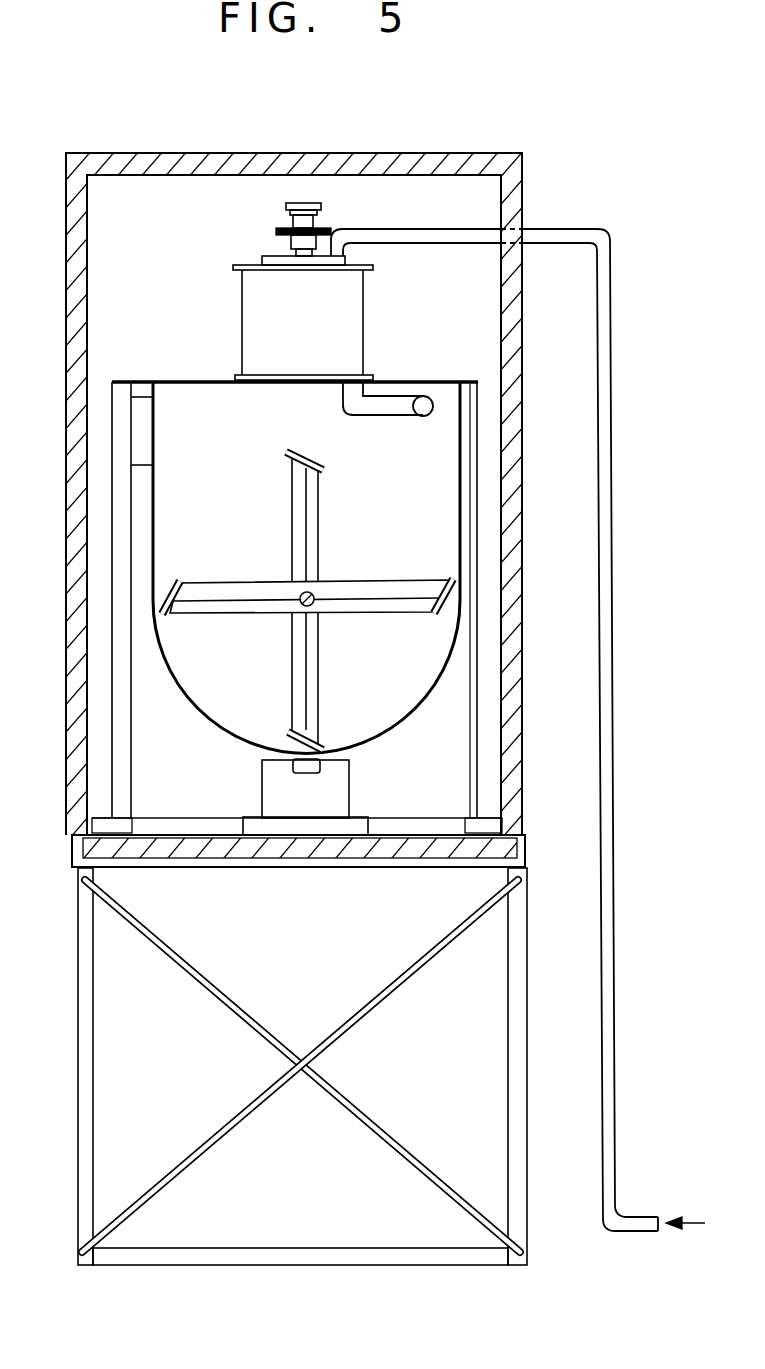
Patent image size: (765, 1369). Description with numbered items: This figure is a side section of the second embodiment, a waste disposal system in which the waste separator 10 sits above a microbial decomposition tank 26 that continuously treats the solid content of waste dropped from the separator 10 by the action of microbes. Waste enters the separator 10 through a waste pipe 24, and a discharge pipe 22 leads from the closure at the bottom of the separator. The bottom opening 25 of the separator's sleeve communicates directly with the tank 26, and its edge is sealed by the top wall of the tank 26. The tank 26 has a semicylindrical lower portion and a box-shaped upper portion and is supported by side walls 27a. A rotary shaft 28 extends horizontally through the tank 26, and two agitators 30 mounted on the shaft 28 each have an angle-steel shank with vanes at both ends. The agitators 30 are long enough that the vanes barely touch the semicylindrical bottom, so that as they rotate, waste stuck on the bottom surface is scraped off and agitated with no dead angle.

The waste separator 10 is at (318, 324).
The discharge pipe 22 is at (398, 406).
The waste pipe 24 is at (430, 240).
The bottom opening 25 is at (293, 384).
The microbial decomposition tank 26 is at (393, 665).
The side walls 27a is at (125, 780).
The rotary shaft 28 is at (311, 595).
The agitators 30 is at (173, 604).